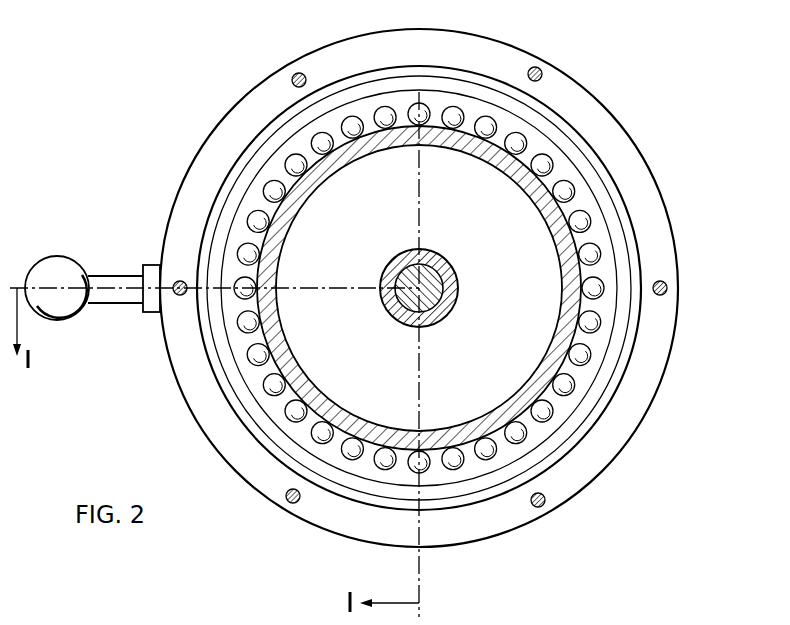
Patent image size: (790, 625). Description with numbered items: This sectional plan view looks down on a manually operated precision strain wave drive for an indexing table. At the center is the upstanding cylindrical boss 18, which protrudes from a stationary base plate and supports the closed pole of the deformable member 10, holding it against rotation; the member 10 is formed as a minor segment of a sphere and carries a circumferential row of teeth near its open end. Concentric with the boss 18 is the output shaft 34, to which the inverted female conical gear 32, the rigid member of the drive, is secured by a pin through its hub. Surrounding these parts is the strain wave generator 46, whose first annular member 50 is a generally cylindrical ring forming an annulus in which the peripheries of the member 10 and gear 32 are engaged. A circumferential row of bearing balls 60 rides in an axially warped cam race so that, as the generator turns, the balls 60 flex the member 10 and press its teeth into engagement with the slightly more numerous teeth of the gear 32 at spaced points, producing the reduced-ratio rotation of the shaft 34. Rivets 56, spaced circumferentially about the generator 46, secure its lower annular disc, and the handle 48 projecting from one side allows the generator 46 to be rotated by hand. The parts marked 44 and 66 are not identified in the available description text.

The deformable member 10 is at (573, 161).
The upstanding cylindrical boss 18 is at (458, 273).
The inverted female conical gear 32 is at (631, 258).
The output shaft 34 is at (443, 296).
The hub 44 is at (407, 270).
The strain wave generator 46 is at (667, 184).
The handle 48 is at (70, 282).
The first annular member 50 is at (640, 148).
The rivets 56 is at (667, 286).
The bearing balls 60 is at (449, 107).
The retainer ring 66 is at (580, 236).